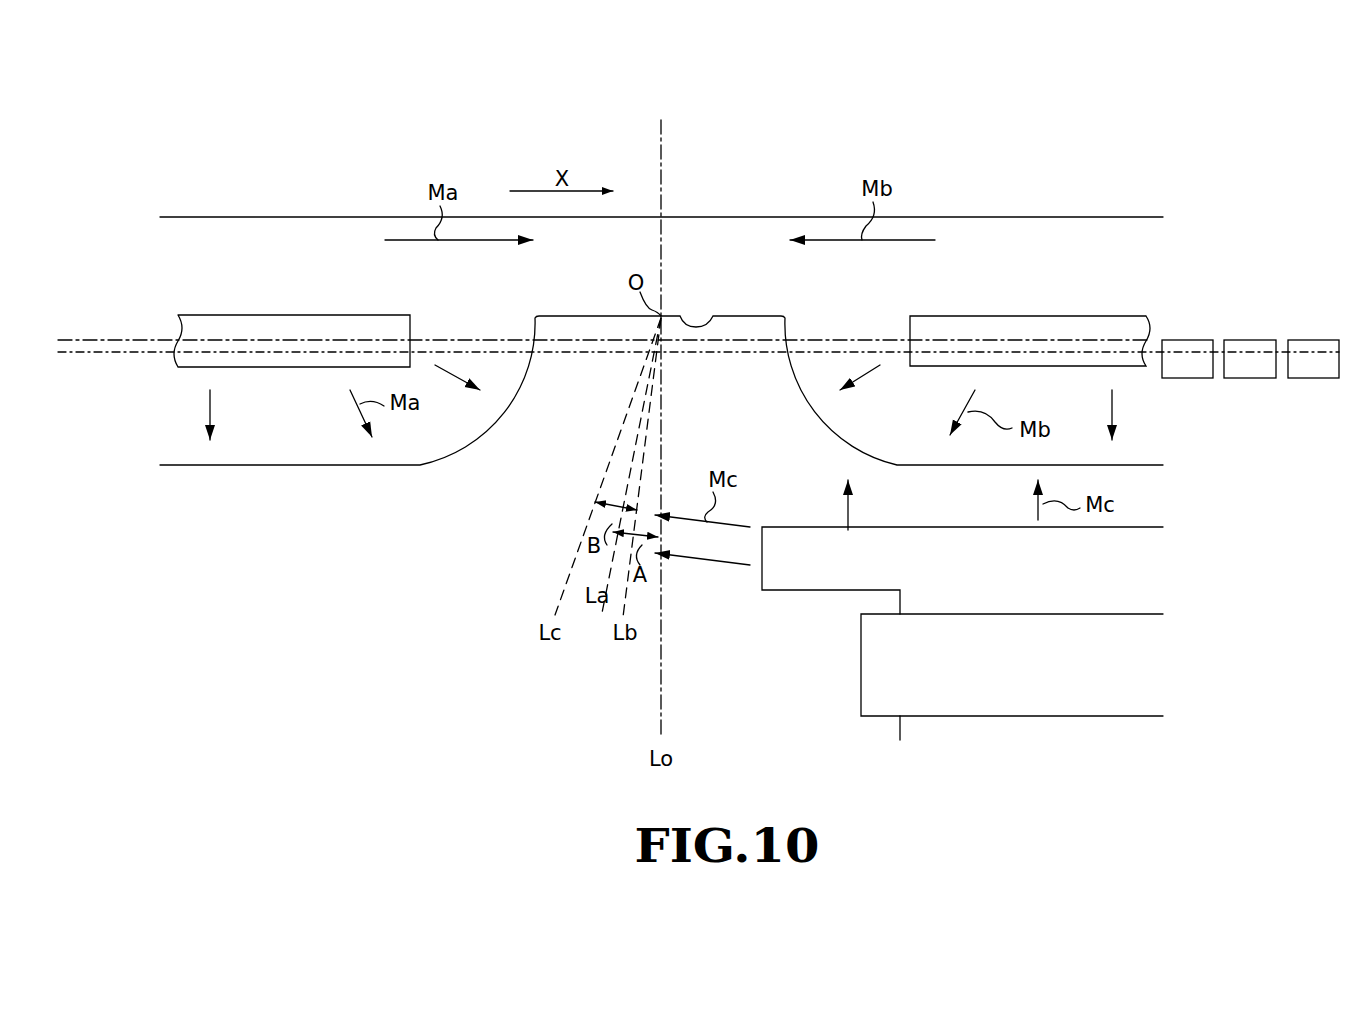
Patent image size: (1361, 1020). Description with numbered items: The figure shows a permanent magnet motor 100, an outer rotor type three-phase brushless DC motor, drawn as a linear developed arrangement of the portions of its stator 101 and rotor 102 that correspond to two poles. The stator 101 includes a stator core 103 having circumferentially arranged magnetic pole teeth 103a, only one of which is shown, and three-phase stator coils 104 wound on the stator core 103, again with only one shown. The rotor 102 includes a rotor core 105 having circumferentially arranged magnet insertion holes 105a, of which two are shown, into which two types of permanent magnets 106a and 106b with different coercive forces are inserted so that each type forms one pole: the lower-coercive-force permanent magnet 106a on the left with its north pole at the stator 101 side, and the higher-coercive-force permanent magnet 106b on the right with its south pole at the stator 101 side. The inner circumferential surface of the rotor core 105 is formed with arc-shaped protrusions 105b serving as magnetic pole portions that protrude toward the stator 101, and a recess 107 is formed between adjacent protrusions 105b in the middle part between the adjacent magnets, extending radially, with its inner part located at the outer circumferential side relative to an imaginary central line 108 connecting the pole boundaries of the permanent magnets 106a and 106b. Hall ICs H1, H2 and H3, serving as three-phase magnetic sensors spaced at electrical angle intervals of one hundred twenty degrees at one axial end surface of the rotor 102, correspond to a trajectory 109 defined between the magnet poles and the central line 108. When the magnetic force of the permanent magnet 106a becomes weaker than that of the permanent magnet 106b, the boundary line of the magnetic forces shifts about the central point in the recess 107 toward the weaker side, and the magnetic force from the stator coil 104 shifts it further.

The permanent magnet motor 100 is at (1137, 185).
The stator 101 is at (1200, 562).
The rotor 102 is at (1150, 282).
The stator core 103 is at (900, 728).
The magnetic pole teeth 103a is at (882, 527).
The stator coils 104 is at (876, 672).
The rotor core 105 is at (782, 217).
The magnet insertion holes 105a is at (408, 327).
The protrusions 105b is at (285, 468).
The permanent magnet 106a is at (252, 315).
The permanent magnet 106b is at (950, 316).
The recess 107 is at (712, 320).
The imaginary central line 108 is at (463, 338).
The trajectory 109 is at (745, 358).
The Hall IC H1 is at (1187, 378).
The Hall IC H2 is at (1250, 378).
The Hall IC H3 is at (1313, 378).